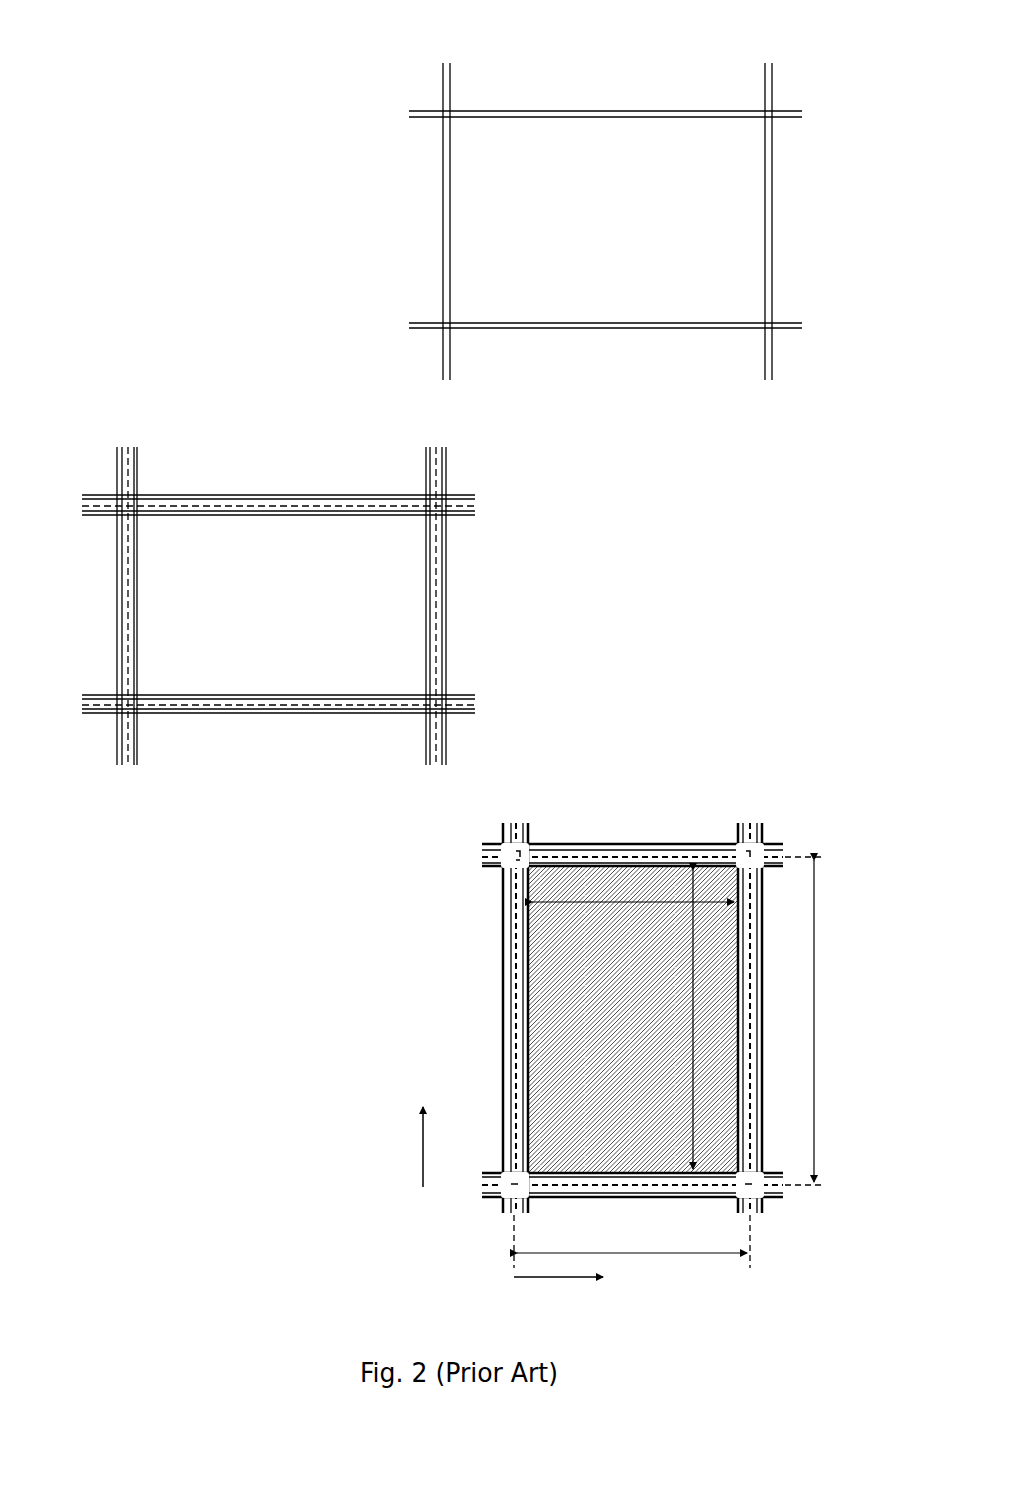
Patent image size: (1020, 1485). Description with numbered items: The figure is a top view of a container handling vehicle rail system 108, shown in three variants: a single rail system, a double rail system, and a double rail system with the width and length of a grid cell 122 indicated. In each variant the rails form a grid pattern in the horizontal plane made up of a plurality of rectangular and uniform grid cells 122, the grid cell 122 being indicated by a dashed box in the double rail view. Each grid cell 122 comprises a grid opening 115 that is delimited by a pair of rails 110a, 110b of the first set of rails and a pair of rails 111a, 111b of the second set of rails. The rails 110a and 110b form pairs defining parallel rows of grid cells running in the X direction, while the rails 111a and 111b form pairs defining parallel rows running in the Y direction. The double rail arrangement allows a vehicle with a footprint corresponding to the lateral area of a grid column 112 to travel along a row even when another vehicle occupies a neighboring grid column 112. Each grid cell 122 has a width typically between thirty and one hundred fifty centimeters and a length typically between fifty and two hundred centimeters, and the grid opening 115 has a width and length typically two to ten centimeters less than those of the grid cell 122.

The rail system 108 is at (532, 86).
The first rail of the first set of rails 110a is at (530, 119).
The second rail of the first set of rails 110b is at (638, 322).
The first rail of the second set of rails 111a is at (451, 260).
The second rail of the second set of rails 111b is at (764, 182).
The grid column 112 is at (650, 111).
The grid opening 115 is at (623, 229).
The grid cell 122 is at (250, 505).